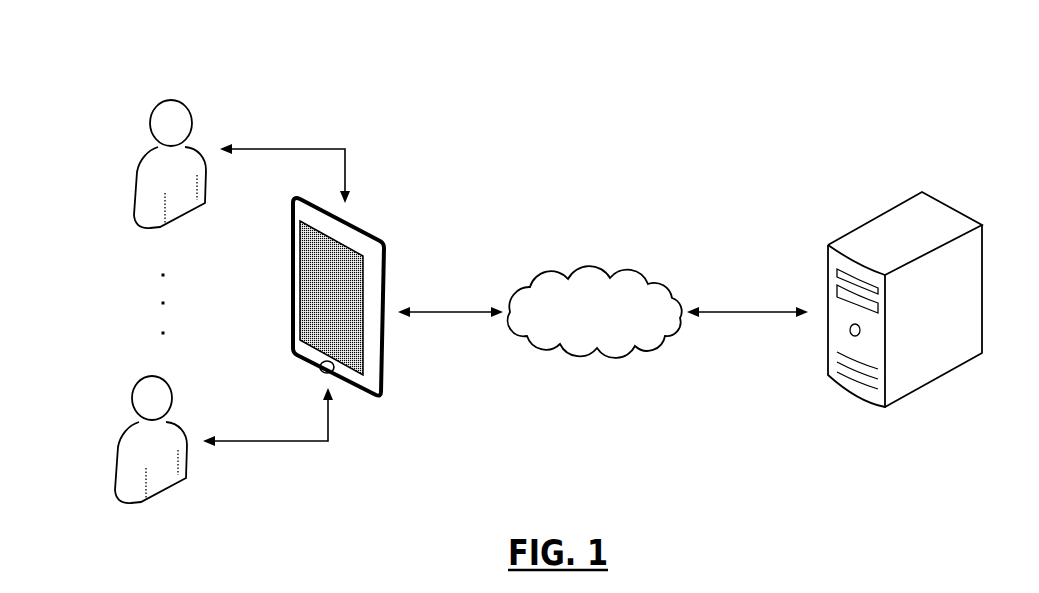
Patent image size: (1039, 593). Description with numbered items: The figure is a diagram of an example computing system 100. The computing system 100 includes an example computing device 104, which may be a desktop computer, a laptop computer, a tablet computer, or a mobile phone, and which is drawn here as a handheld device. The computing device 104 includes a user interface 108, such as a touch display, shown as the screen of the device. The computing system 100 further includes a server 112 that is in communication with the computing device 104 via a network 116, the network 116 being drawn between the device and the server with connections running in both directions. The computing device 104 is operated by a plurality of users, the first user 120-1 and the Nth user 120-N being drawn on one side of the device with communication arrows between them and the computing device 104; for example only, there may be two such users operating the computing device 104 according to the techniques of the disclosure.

The computing system 100 is at (836, 44).
The computing device 104 is at (383, 368).
The user interface 108 is at (385, 245).
The server 112 is at (952, 208).
The network 116 is at (595, 276).
The user 120-1 is at (171, 100).
The user 120-N is at (117, 452).